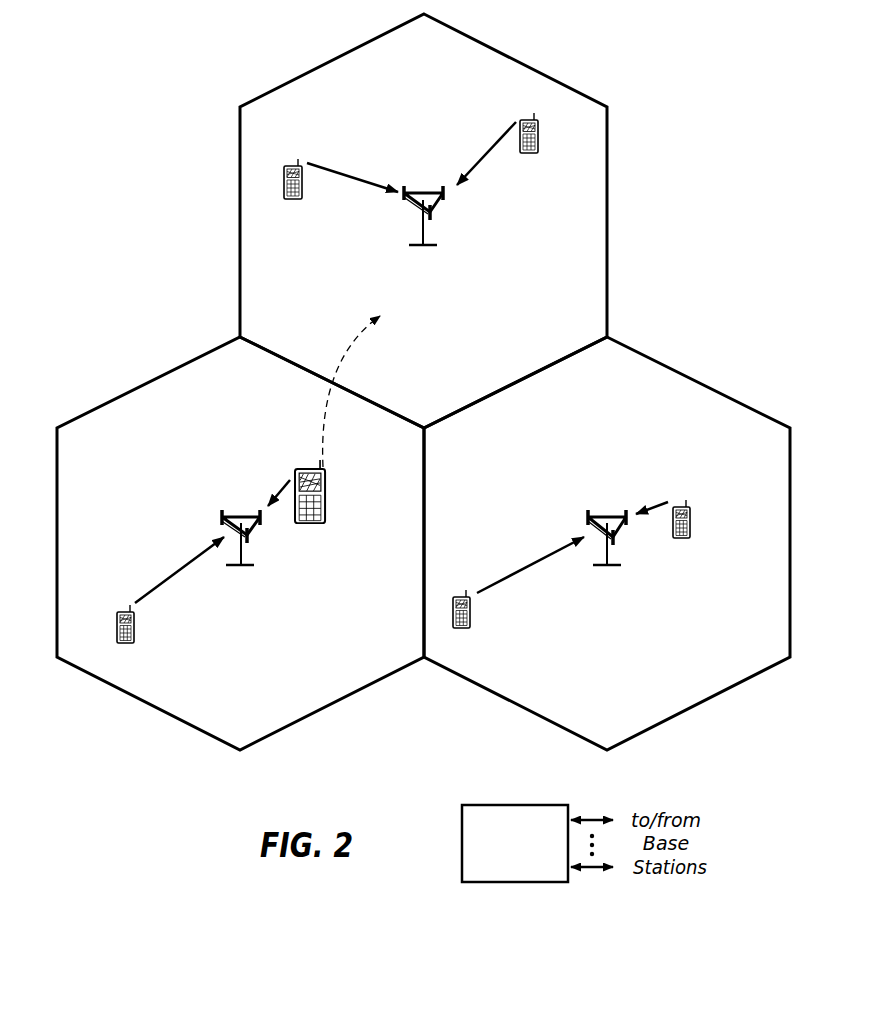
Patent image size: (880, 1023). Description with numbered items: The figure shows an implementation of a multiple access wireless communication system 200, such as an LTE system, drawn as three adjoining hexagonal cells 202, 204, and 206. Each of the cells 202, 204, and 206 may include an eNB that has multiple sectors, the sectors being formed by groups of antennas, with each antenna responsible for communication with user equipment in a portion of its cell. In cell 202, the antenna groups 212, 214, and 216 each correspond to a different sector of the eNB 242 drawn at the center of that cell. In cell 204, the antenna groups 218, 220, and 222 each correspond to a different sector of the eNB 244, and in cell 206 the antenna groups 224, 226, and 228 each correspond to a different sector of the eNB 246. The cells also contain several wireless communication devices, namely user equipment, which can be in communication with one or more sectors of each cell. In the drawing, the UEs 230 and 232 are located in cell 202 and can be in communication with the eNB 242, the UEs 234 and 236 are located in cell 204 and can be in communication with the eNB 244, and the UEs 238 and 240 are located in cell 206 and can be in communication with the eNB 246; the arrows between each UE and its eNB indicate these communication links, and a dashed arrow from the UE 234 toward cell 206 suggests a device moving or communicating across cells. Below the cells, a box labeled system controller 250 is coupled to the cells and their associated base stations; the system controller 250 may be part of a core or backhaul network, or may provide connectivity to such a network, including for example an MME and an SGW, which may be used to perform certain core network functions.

The multiple access wireless communication system 200 is at (160, 108).
The cell 202 is at (640, 379).
The cell 204 is at (419, 462).
The cell 206 is at (292, 335).
The antenna group 212 is at (586, 514).
The antenna group 214 is at (616, 539).
The antenna group 216 is at (628, 524).
The antenna group 218 is at (251, 538).
The antenna group 220 is at (262, 522).
The antenna group 222 is at (222, 512).
The antenna group 224 is at (404, 200).
The antenna group 226 is at (432, 214).
The antenna group 228 is at (434, 200).
The UE 230 is at (686, 505).
The UE 232 is at (468, 584).
The UE 234 is at (298, 466).
The UE 236 is at (129, 609).
The UE 238 is at (297, 163).
The UE 240 is at (533, 118).
The eNB 242 is at (611, 514).
The eNB 244 is at (235, 508).
The eNB 246 is at (423, 192).
The system controller 250 is at (512, 804).